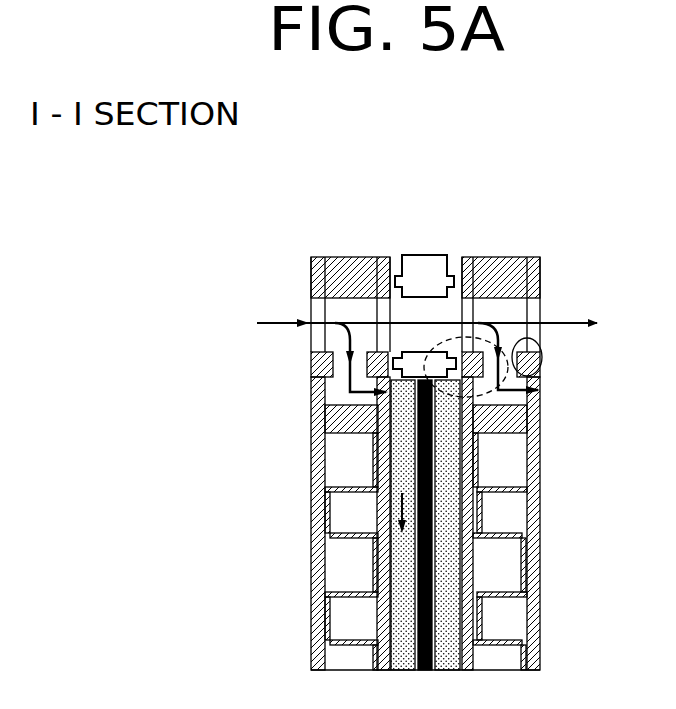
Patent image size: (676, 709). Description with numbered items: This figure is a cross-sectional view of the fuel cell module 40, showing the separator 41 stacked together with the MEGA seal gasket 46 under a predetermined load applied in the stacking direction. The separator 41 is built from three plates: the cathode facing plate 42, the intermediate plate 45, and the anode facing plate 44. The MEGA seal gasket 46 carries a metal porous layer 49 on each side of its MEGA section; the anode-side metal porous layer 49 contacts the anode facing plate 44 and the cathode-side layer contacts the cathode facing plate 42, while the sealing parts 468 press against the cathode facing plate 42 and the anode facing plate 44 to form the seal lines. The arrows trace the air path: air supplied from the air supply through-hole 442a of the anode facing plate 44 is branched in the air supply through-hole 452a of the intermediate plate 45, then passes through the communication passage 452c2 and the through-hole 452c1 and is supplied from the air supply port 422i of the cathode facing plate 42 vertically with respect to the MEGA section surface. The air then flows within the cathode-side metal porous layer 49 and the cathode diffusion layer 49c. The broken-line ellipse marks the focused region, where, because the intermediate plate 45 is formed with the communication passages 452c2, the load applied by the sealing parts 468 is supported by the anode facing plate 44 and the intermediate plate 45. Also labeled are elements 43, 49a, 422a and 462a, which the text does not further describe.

The fuel cell module 40 is at (463, 148).
The separator 41 is at (408, 195).
The cathode facing plate 42 is at (388, 256).
The heat exchange fin wall 43 is at (337, 588).
The anode facing plate 44 is at (317, 256).
The intermediate plate 45 is at (353, 256).
The MEGA seal gasket 46 is at (442, 255).
The metal porous layer 49 is at (405, 560).
The right catalyst portion 49a is at (445, 455).
The cathode diffusion layer 49c is at (400, 455).
The inner cylinder opening 422a is at (383, 308).
The air supply port 422i is at (312, 423).
The air supply through-hole 442a is at (318, 340).
The air supply through-hole 452a is at (333, 313).
The through-hole 452c1 is at (528, 378).
The communication passage 452c2 is at (540, 343).
The center body passage 462a is at (433, 310).
The sealing part 468 is at (478, 312).